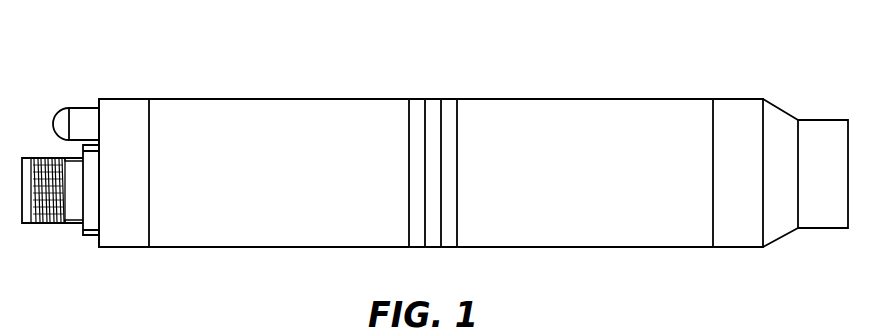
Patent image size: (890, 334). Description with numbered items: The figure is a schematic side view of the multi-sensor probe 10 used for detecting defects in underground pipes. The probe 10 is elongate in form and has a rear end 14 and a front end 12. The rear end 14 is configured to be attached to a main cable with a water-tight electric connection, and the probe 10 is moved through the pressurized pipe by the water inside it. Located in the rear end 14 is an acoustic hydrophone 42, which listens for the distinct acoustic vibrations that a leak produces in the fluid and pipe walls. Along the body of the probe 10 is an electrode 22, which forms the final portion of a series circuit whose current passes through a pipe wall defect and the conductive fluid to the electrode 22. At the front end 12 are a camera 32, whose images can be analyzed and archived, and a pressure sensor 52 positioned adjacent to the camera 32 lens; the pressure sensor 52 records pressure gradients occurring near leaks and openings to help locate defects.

The multi-sensor probe 10 is at (557, 68).
The front end 12 is at (779, 118).
The rear end 14 is at (123, 107).
The electrode 22 is at (433, 107).
The camera 32 is at (822, 125).
The acoustic hydrophone 42 is at (82, 113).
The pressure sensor 52 is at (822, 223).